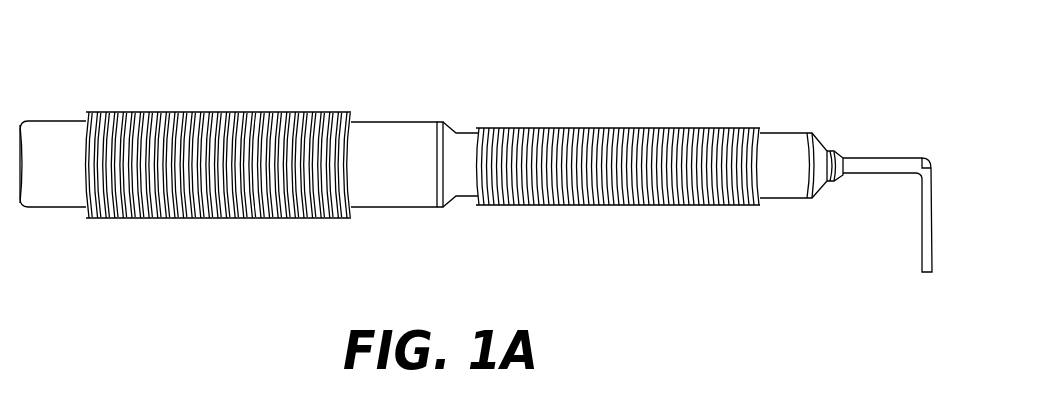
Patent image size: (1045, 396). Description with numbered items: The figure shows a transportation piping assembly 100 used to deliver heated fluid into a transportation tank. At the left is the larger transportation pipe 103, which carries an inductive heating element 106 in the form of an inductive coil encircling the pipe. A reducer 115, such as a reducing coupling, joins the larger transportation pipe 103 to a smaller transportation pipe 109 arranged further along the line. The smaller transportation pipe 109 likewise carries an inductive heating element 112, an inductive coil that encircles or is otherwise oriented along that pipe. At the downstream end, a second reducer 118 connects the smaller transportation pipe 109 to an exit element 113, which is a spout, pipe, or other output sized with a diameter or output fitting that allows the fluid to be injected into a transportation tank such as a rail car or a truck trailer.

The transportation piping assembly 100 is at (172, 66).
The inductive heating element 106 is at (278, 112).
The transportation pipe 103 is at (386, 128).
The reducer 115 is at (452, 183).
The inductive heating element 112 is at (605, 130).
The transportation pipe 109 is at (771, 145).
The reducer 118 is at (818, 186).
The exit element 113 is at (866, 165).